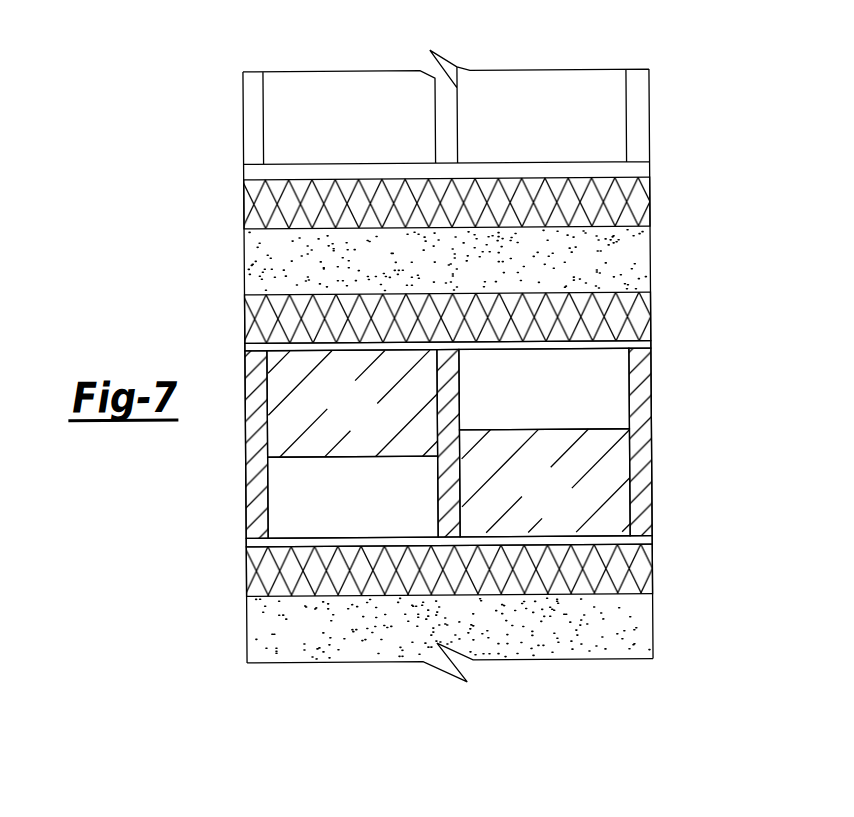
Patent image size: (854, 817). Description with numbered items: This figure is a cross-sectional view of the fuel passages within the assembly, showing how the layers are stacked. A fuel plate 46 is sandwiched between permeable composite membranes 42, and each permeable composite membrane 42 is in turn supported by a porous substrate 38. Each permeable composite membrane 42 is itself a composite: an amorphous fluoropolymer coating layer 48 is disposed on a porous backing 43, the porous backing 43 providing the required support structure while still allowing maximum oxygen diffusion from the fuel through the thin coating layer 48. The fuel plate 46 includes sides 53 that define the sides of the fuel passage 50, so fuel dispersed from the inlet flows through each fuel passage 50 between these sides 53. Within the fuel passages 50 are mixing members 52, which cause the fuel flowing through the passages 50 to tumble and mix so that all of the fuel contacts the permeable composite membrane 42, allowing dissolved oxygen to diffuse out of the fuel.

The porous substrate 38 is at (621, 256).
The permeable composite membrane 42 is at (738, 277).
The porous backing 43 is at (651, 307).
The fuel plate 46 is at (491, 492).
The amorphous fluoropolymer coating layer 48 is at (659, 347).
The fuel passage 50 is at (343, 518).
The mixing member 52 is at (341, 418).
The side 53 is at (427, 505).